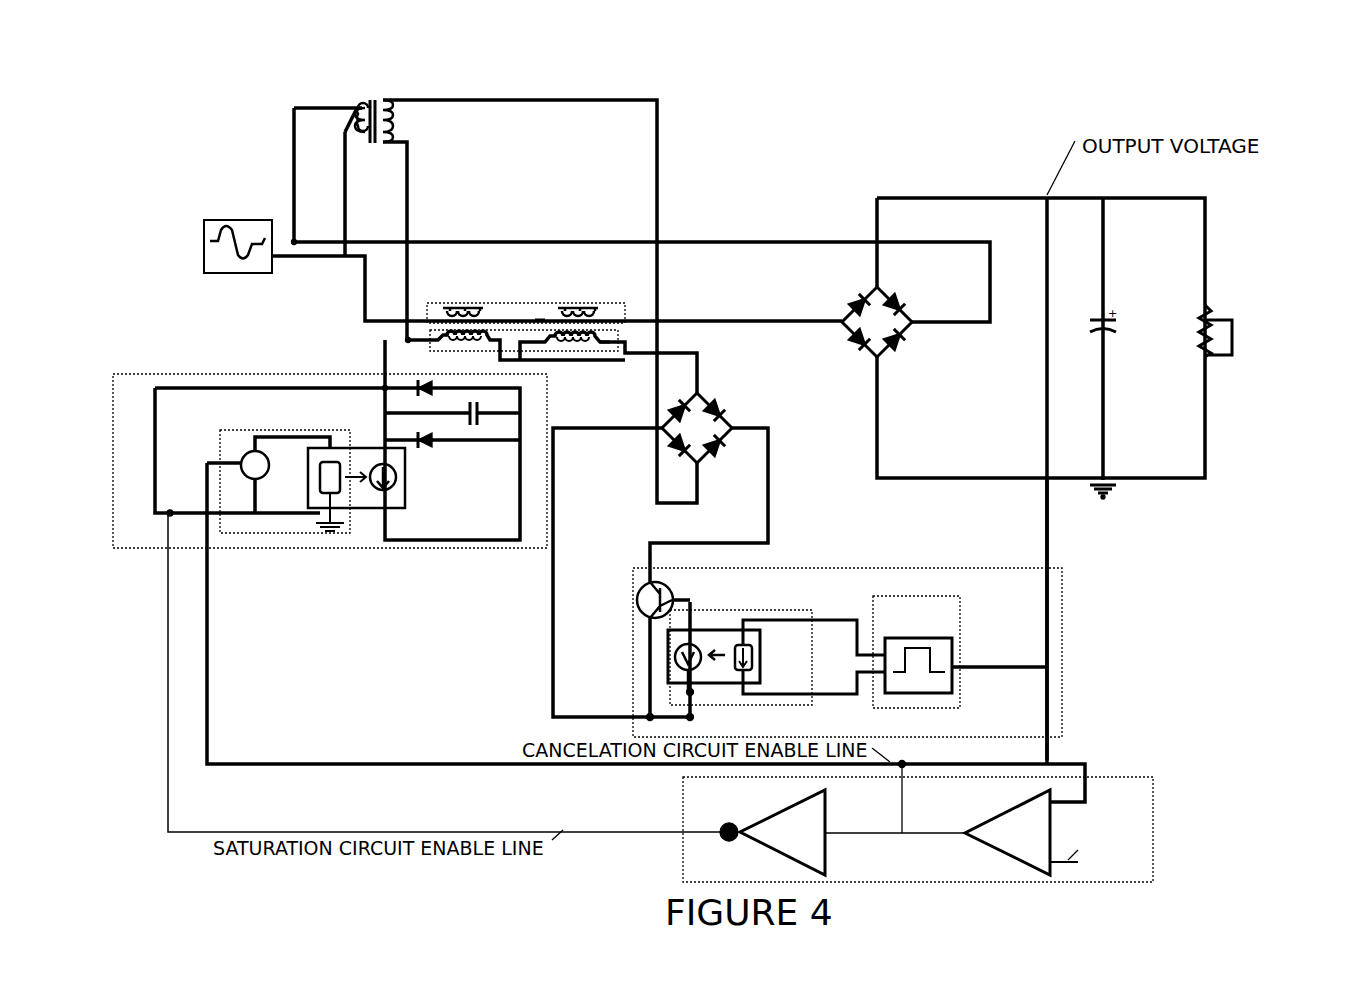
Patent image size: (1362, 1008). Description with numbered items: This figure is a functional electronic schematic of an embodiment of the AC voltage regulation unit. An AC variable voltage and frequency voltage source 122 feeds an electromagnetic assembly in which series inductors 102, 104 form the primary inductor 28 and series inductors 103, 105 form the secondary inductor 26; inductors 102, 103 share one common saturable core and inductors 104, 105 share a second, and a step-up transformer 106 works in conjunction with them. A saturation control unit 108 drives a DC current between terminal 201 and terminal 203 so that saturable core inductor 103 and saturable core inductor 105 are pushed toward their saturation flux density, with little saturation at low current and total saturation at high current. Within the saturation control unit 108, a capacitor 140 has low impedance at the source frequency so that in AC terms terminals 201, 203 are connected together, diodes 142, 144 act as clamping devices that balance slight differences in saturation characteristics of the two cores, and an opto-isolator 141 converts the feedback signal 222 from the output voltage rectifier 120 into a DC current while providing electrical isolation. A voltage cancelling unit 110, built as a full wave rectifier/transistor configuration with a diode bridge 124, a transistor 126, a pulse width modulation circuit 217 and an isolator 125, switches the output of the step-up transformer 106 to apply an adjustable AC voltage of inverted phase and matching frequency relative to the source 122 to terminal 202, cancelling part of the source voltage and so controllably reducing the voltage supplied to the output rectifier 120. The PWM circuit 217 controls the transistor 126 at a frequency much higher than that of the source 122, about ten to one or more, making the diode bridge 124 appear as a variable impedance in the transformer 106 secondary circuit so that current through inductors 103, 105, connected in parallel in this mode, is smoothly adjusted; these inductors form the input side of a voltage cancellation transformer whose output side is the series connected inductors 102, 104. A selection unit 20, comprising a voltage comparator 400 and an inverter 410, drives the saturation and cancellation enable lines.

The step-up transformer 106 is at (371, 92).
The AC variable voltage and frequency voltage source 122 is at (242, 284).
The series inductor 102 is at (460, 300).
The series inductor 104 is at (590, 300).
The terminal 201 is at (410, 335).
The primary inductor 28 is at (540, 325).
The terminal 203 is at (540, 320).
The terminal 202 is at (605, 335).
The secondary inductor 26 is at (442, 347).
The saturable core inductor 103 is at (488, 342).
The saturable core inductor 105 is at (596, 342).
The saturation control unit 108 is at (338, 373).
The opto-isolator 141 is at (283, 538).
The diode 142 is at (413, 395).
The diode 144 is at (432, 450).
The capacitor 140 is at (468, 455).
The diode bridge 124 is at (710, 393).
The voltage rectifier 120 is at (840, 345).
The feedback signal 222 is at (1047, 493).
The voltage cancelling unit 110 is at (1065, 600).
The transistor 126 is at (643, 585).
The isolator 125 is at (748, 610).
The pulse width modulation circuit 217 is at (917, 598).
The selection unit 20 is at (1155, 832).
The inverter 410 is at (757, 820).
The voltage comparator 400 is at (985, 820).